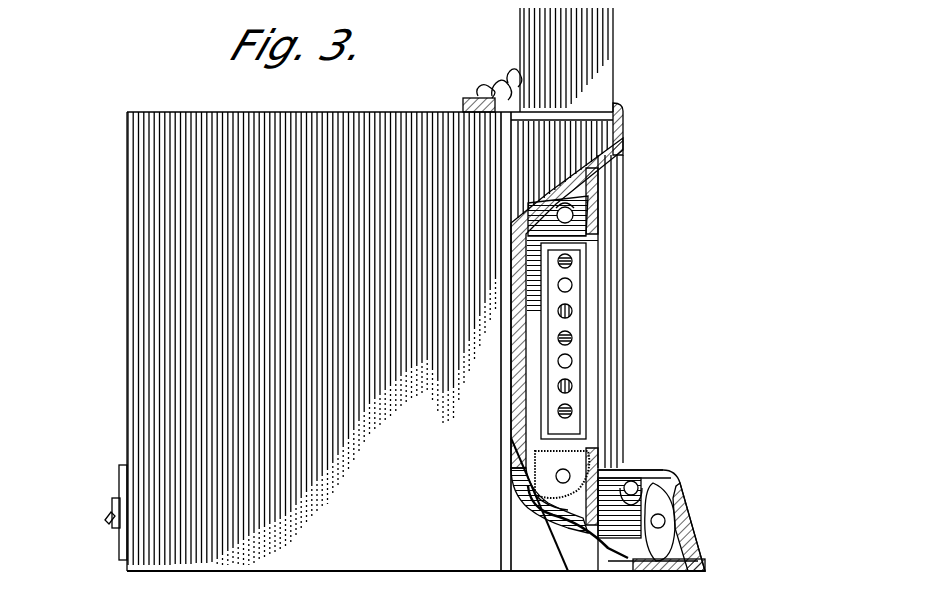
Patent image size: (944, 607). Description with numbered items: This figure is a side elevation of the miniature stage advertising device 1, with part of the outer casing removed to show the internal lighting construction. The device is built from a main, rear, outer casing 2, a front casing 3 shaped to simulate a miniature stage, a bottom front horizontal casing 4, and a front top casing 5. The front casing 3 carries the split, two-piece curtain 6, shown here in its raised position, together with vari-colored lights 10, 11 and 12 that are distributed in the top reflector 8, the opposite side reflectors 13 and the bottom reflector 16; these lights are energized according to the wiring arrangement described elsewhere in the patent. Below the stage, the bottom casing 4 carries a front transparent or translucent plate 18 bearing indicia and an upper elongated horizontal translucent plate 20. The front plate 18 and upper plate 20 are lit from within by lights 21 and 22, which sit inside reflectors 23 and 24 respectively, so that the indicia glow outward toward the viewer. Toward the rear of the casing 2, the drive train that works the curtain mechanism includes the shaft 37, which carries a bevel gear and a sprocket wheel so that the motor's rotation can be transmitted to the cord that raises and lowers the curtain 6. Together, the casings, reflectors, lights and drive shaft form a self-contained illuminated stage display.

The miniature stage advertising device 1 is at (107, 311).
The main rear outer casing 2 is at (410, 446).
The front casing 3 is at (527, 500).
The bottom front horizontal casing 4 is at (623, 533).
The front top casing 5 is at (535, 24).
The split curtain 6 is at (598, 232).
The top reflector 8 is at (598, 176).
The vari-colored light 10 is at (563, 254).
The vari-colored light 11 is at (565, 277).
The vari-colored light 12 is at (580, 208).
The side reflector 13 is at (572, 322).
The bottom reflector 16 is at (540, 450).
The front transparent plate 18 is at (672, 500).
The upper elongated horizontal translucent plate 20 is at (618, 462).
The light 21 is at (656, 518).
The light 22 is at (640, 455).
The reflector 23 is at (632, 560).
The reflector 24 is at (690, 427).
The shaft 37 is at (104, 502).